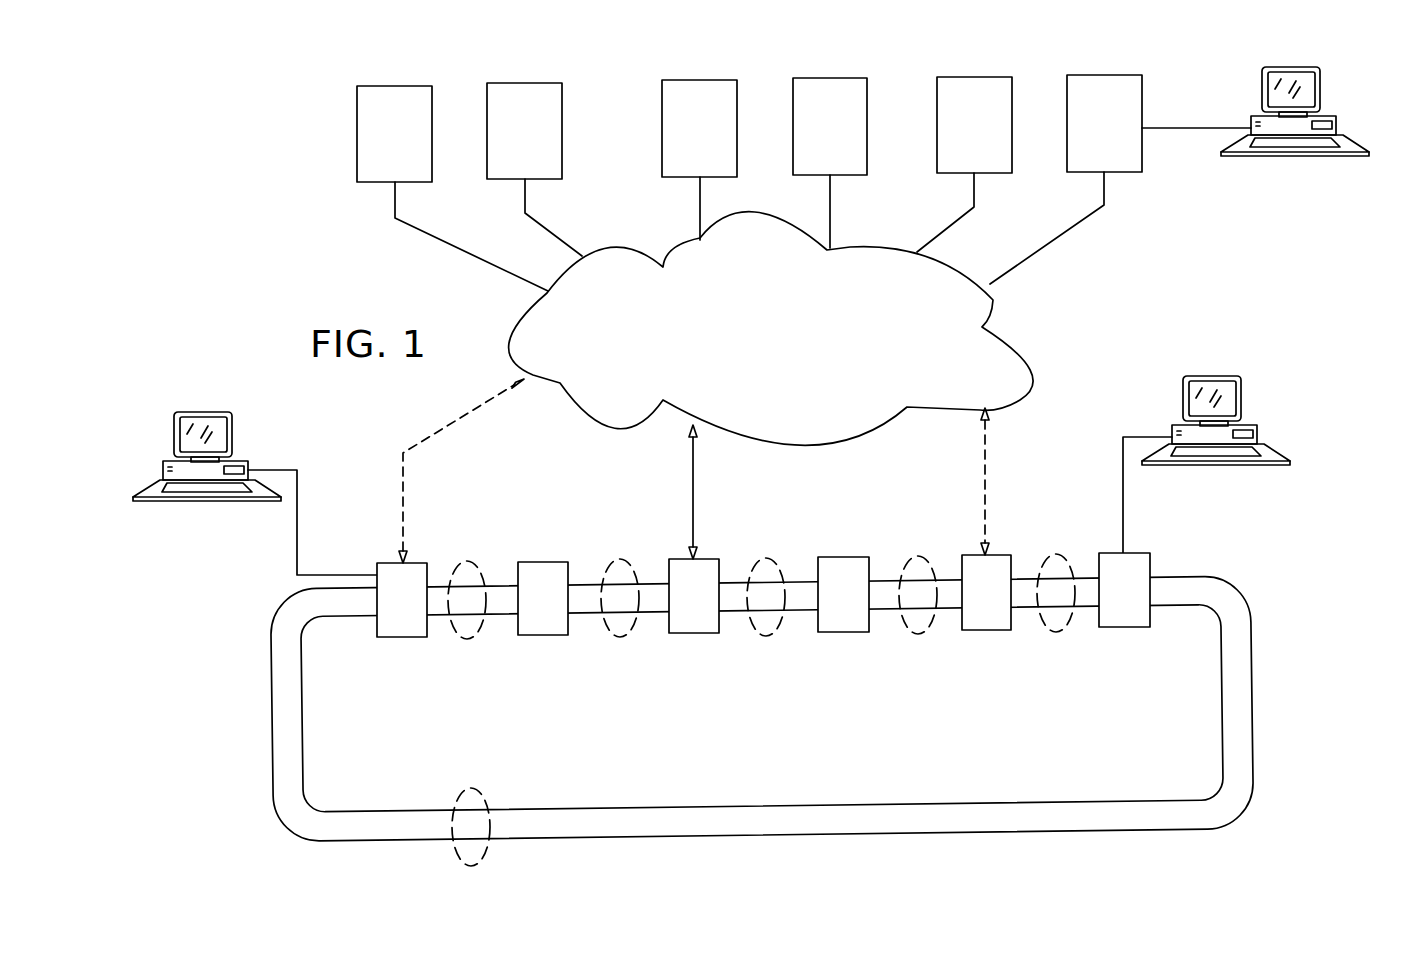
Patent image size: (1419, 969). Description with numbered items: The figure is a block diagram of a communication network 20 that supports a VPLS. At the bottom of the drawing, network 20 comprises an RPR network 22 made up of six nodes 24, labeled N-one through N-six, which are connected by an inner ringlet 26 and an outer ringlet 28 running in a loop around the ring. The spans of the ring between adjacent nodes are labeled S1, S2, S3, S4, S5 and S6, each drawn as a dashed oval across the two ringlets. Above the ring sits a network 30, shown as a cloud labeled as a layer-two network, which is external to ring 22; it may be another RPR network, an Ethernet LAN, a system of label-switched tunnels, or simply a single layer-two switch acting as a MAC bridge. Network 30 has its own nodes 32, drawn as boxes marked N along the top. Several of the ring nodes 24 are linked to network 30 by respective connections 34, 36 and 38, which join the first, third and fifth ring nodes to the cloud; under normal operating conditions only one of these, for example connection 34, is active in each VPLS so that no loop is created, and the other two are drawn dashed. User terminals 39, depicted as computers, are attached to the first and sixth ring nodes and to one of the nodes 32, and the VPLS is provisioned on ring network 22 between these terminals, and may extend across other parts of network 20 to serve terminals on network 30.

The communication network 20 is at (1182, 264).
The RPR network 22 is at (809, 713).
The nodes 24 is at (382, 637).
The inner ringlet 26 is at (1020, 801).
The outer ringlet 28 is at (1020, 831).
The network 30 is at (1021, 347).
The nodes 32 is at (525, 83).
The connection 34 is at (693, 478).
The connection 36 is at (403, 478).
The connection 38 is at (985, 473).
The user terminals 39 is at (164, 466).
The span S1 is at (455, 632).
The span S2 is at (608, 630).
The span S3 is at (754, 628).
The span S4 is at (906, 626).
The span S5 is at (1044, 624).
The span S6 is at (459, 855).